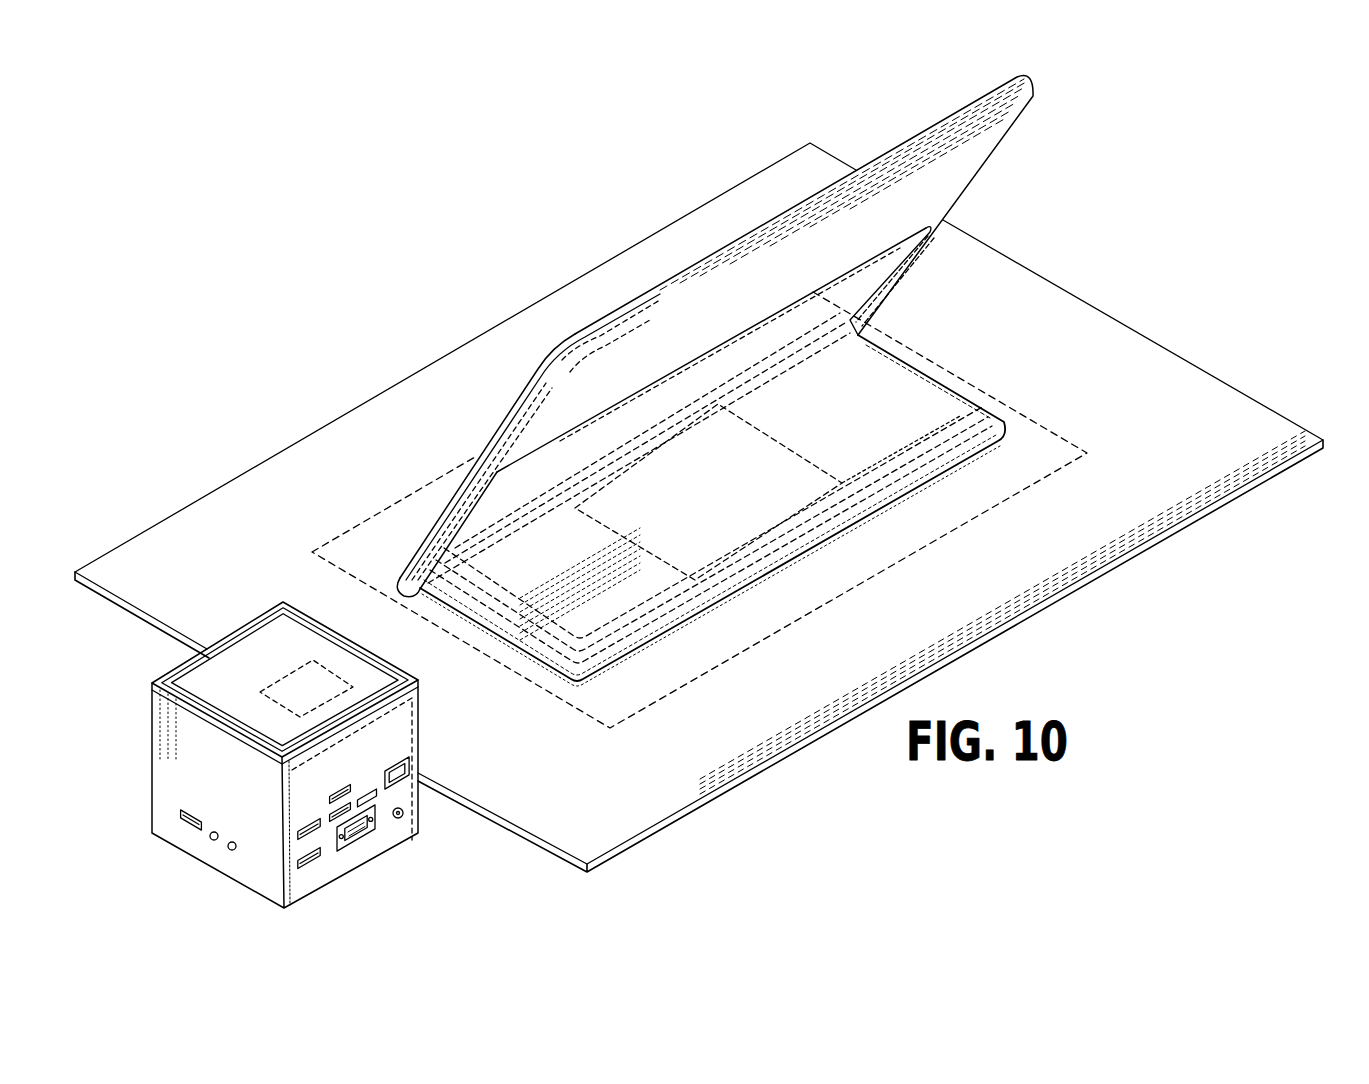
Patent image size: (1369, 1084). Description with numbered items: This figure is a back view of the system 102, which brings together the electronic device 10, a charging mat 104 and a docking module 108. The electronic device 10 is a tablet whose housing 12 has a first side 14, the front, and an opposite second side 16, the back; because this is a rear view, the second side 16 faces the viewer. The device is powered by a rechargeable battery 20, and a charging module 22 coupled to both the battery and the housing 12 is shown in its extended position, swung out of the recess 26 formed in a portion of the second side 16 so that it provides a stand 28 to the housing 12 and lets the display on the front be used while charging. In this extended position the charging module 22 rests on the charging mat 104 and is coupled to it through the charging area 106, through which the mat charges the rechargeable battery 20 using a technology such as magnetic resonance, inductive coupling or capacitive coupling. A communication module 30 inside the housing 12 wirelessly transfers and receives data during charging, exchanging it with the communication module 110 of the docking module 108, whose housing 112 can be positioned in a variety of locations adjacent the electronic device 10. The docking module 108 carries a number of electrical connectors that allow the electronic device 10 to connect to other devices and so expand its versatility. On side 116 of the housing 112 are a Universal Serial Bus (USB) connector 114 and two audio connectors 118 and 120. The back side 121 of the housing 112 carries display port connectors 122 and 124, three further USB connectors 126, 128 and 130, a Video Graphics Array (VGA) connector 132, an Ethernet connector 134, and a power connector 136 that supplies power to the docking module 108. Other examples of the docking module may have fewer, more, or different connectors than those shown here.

The electronic device 10 is at (715, 336).
The housing 12 is at (893, 161).
The first side 14 is at (493, 428).
The second side 16 is at (943, 201).
The rechargeable battery 20 is at (712, 499).
The charging module 22 is at (628, 548).
The recess 26 is at (867, 277).
The stand 28 is at (787, 562).
The communication module 30 is at (612, 327).
The system 102 is at (426, 211).
The charging mat 104 is at (405, 371).
The charging area 106 is at (938, 540).
The docking module 108 is at (286, 741).
The communication module 110 is at (337, 670).
The housing 112 is at (150, 760).
The Universal Serial Bus (USB) connector 114 is at (182, 828).
The side 116 is at (160, 807).
The audio connector 118 is at (215, 841).
The audio connector 120 is at (233, 857).
The back side 121 is at (400, 737).
The display port connector 122 is at (307, 825).
The display port connector 124 is at (307, 873).
The USB connector 126 is at (338, 790).
The USB connector 128 is at (327, 807).
The USB connector 130 is at (363, 785).
The Video Graphics Array (VGA) connector 132 is at (367, 855).
The Ethernet connector 134 is at (422, 778).
The power connector 136 is at (407, 820).